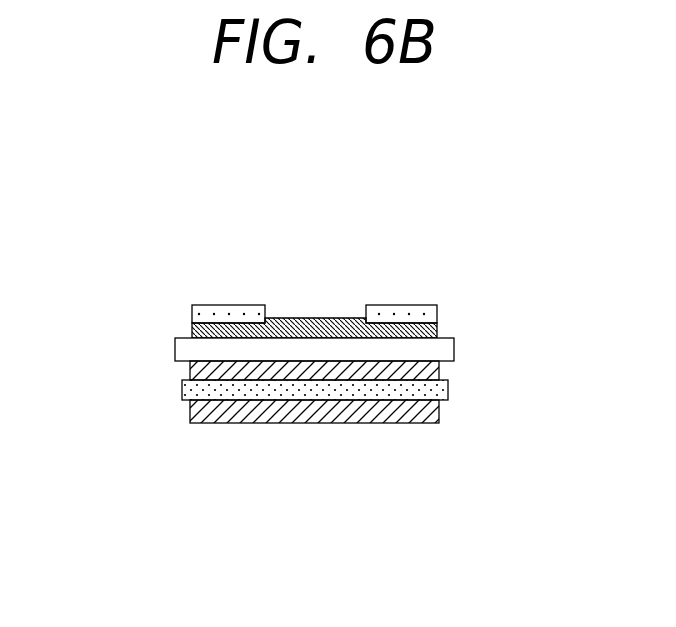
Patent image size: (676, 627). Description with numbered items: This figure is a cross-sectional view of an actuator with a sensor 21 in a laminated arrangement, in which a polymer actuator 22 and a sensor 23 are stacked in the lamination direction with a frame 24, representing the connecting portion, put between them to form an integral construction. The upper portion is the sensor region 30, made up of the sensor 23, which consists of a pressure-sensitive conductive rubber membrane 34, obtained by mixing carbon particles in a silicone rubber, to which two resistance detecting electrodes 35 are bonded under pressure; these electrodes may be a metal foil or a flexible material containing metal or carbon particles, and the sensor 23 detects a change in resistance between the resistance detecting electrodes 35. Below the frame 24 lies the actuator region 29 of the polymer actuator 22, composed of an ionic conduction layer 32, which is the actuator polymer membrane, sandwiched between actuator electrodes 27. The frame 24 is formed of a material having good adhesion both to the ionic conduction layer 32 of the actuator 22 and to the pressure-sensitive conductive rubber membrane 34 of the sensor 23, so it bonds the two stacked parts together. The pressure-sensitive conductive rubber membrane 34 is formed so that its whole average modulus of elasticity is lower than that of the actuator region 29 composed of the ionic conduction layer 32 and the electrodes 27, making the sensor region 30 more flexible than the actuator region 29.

The actuator with a sensor 21 is at (158, 172).
The actuator 22 is at (185, 458).
The sensor 23 is at (186, 266).
The frame 24 is at (183, 347).
The actuator electrodes 27 is at (395, 373).
The actuator region 29 is at (482, 353).
The sensor region 30 is at (482, 303).
The ionic conduction layer 32 is at (267, 392).
The pressure-sensitive conductive rubber membrane 34 is at (333, 318).
The resistance detecting electrodes 35 is at (252, 312).